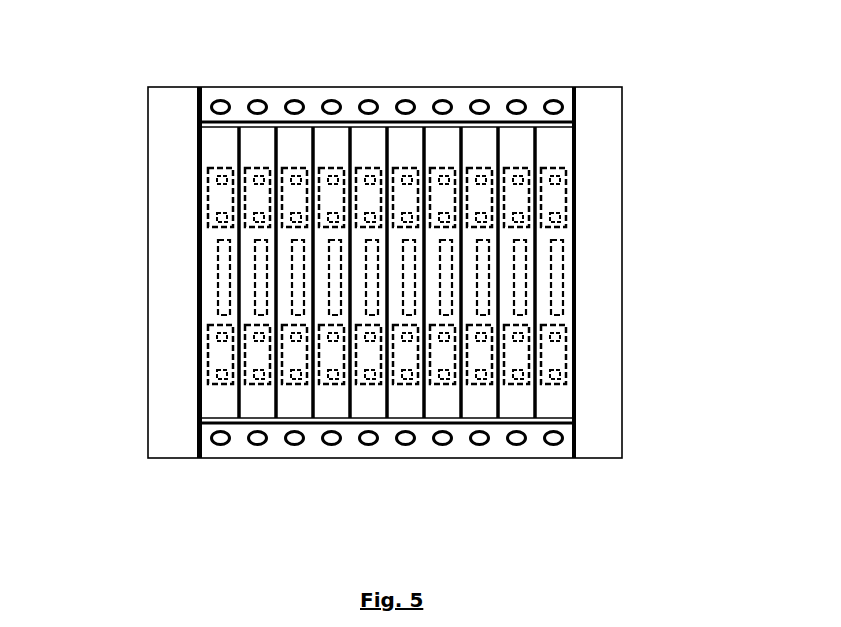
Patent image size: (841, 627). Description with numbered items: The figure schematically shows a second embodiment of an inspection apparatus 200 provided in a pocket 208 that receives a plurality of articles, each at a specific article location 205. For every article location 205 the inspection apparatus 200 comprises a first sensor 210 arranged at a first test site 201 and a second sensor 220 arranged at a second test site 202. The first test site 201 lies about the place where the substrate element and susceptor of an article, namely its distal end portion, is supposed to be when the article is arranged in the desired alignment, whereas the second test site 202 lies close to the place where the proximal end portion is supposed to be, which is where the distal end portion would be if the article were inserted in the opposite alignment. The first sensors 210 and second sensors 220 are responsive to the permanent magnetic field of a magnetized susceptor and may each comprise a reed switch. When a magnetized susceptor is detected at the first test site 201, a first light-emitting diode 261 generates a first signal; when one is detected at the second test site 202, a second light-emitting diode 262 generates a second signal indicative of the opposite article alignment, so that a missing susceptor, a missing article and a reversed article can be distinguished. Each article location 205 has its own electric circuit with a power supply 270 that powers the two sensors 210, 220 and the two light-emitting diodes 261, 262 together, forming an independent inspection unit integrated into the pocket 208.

The inspection apparatus 200 is at (598, 378).
The first test site 201 is at (204, 355).
The second test site 202 is at (204, 195).
The article location 205 is at (394, 128).
The pocket 208 is at (608, 142).
The first sensor 210 is at (228, 385).
The second sensor 220 is at (264, 166).
The first light-emitting diode 261 is at (214, 452).
The second light-emitting diode 262 is at (206, 94).
The power supply 270 is at (214, 265).